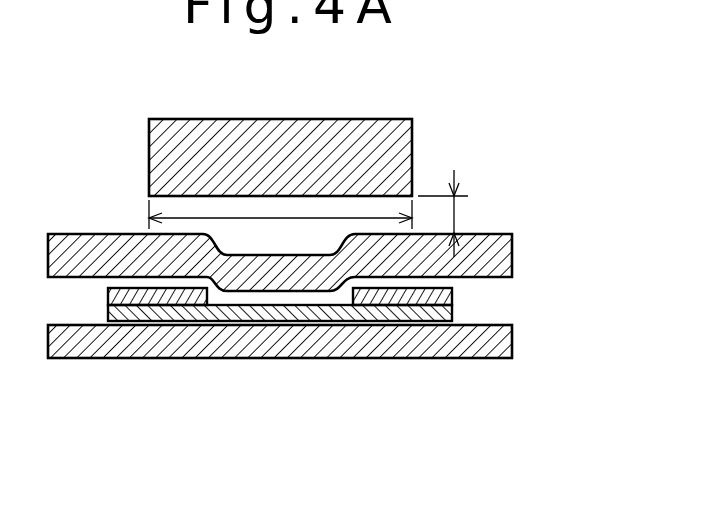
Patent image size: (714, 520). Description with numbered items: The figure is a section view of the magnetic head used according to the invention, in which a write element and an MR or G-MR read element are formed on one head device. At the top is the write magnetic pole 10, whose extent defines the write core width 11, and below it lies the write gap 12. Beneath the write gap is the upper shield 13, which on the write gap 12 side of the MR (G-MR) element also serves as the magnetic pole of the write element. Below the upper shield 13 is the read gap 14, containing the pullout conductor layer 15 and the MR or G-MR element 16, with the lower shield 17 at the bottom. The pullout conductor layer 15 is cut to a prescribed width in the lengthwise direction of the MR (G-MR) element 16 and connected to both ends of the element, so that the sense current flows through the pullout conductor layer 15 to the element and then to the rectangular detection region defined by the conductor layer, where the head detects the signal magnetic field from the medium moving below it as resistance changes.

The write magnetic pole 10 is at (400, 147).
The write core width 11 is at (255, 219).
The write gap 12 is at (450, 213).
The upper shield 13 is at (505, 250).
The read gap 14 is at (274, 296).
The pullout conductor layer 15 is at (452, 295).
The MR or G-MR element 16 is at (452, 313).
The lower shield 17 is at (513, 344).